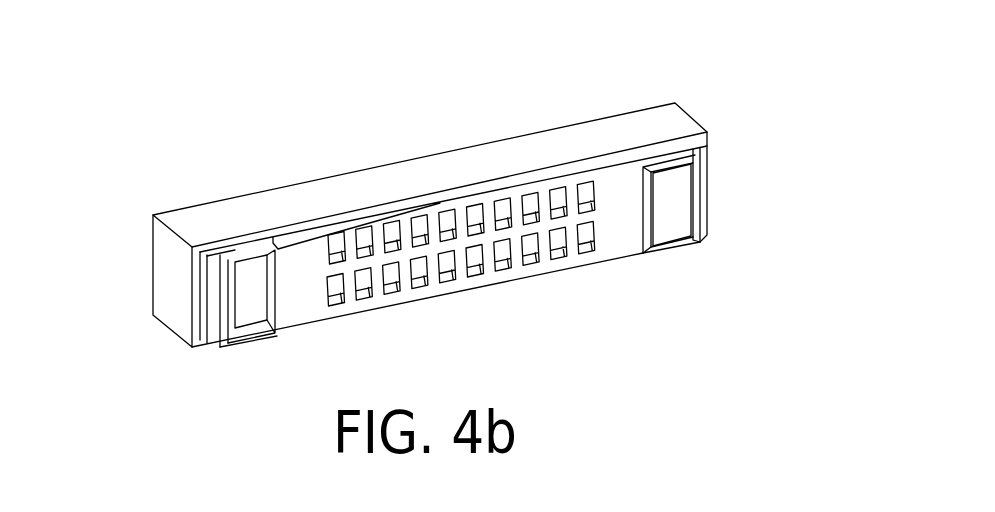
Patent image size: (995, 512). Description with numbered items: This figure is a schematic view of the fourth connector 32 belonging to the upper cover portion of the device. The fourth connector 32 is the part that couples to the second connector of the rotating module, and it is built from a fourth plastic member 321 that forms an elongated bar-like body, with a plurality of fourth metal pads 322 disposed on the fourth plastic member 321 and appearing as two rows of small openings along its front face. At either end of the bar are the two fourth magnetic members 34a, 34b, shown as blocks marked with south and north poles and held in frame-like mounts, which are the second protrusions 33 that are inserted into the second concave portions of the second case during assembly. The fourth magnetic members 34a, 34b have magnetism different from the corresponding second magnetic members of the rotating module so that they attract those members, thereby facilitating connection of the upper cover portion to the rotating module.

The fourth connector 32 is at (34, 45).
The fourth plastic member 321 is at (647, 130).
The fourth metal pads 322 is at (303, 253).
The second protrusions 33 is at (232, 315).
The fourth magnetic member 34a is at (237, 283).
The fourth magnetic member 34b is at (678, 210).